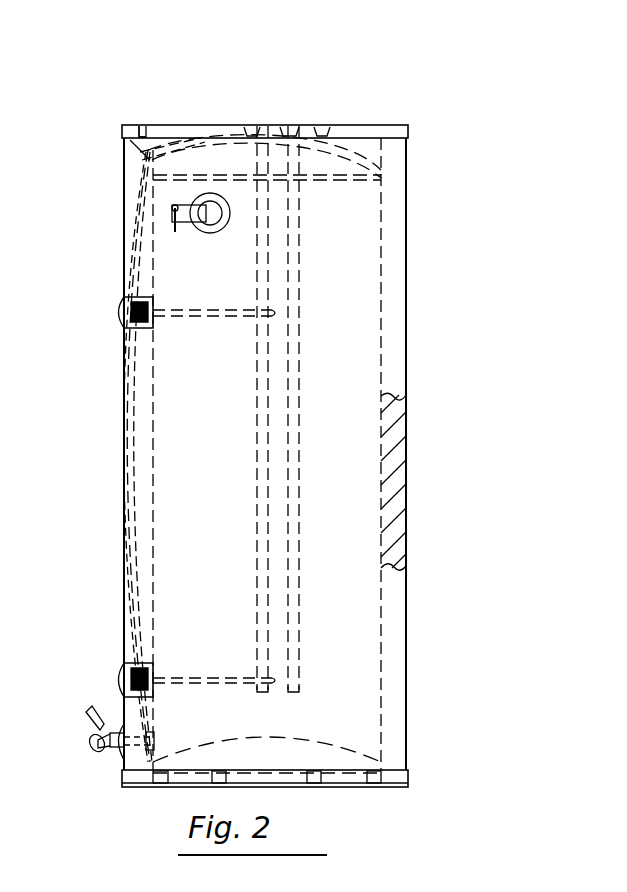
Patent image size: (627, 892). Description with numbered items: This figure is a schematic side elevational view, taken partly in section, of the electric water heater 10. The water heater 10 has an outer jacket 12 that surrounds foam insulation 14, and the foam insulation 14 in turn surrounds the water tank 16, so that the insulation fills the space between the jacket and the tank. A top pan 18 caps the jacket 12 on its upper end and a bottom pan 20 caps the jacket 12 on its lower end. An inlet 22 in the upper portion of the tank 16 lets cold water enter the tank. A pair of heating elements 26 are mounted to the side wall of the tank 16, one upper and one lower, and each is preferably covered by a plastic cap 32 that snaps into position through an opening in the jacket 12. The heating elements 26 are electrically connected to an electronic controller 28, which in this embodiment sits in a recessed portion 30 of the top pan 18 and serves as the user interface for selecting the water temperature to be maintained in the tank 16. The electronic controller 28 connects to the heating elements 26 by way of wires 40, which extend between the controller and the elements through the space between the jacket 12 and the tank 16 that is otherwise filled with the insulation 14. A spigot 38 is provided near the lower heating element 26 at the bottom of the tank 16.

The electric water heater 10 is at (450, 383).
The outer jacket 12 is at (124, 547).
The foam insulation 14 is at (400, 478).
The water tank 16 is at (400, 617).
The top pan 18 is at (360, 125).
The bottom pan 20 is at (139, 790).
The inlet 22 is at (268, 160).
The heating elements 26 is at (282, 308).
The electronic controller 28 is at (158, 150).
The recessed portion 30 is at (143, 130).
The plastic caps 32 is at (117, 311).
The spigot 38 is at (88, 748).
The wires 40 is at (134, 455).